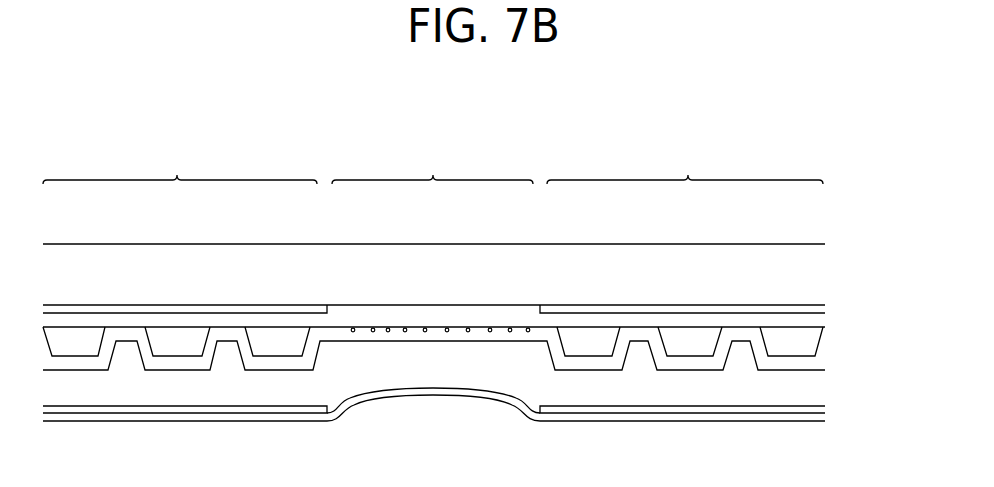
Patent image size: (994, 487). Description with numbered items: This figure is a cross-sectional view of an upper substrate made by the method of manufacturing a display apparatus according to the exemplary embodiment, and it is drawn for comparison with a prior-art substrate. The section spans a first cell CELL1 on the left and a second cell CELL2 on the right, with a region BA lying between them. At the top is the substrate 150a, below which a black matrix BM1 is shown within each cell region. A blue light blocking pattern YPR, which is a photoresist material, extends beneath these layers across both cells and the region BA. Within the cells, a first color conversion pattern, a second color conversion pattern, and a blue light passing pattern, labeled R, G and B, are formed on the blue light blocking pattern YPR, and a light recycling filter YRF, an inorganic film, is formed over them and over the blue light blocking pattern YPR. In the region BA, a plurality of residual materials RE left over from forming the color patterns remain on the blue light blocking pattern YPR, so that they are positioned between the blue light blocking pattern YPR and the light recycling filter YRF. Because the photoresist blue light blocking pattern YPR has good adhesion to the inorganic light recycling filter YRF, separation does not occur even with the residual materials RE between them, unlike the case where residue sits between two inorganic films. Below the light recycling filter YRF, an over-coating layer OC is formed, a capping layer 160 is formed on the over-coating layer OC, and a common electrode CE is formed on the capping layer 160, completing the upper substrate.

The first cell CELL1 is at (180, 164).
The region between cells BA is at (432, 164).
The second cell CELL2 is at (685, 164).
The upper substrate 150a is at (817, 264).
The first black matrix BM1 is at (825, 305).
The blue light blocking pattern YPR is at (825, 319).
The residual materials RE is at (468, 329).
The light recycling filter YRF is at (817, 360).
The over-coating layer OC is at (817, 389).
The capping layer 160 is at (825, 410).
The common electrode CE is at (825, 418).